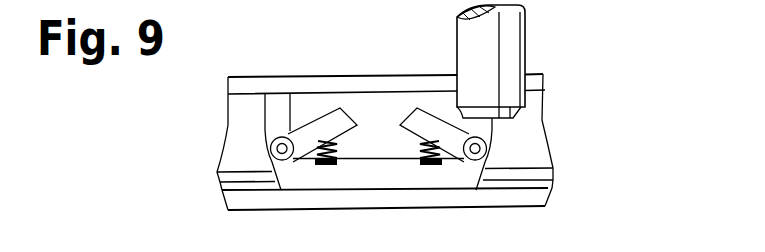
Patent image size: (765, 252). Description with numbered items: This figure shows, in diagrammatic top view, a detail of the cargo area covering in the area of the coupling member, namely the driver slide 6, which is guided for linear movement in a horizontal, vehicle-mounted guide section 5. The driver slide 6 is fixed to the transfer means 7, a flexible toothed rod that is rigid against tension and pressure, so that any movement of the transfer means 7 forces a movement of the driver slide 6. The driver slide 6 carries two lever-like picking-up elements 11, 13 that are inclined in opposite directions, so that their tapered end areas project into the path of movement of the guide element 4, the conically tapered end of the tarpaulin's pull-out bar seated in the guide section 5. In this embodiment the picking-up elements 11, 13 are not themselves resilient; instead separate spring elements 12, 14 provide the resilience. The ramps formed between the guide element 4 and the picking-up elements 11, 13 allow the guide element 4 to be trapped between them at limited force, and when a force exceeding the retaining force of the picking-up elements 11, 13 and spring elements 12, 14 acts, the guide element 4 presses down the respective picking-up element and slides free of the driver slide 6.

The guide element 4 is at (507, 57).
The guide section 5 is at (387, 82).
The driver slide 6 is at (322, 77).
The transfer means 7 is at (235, 177).
The picking-up element 11 is at (423, 119).
The spring element 12 is at (435, 166).
The picking-up element 13 is at (326, 122).
The spring element 14 is at (321, 166).